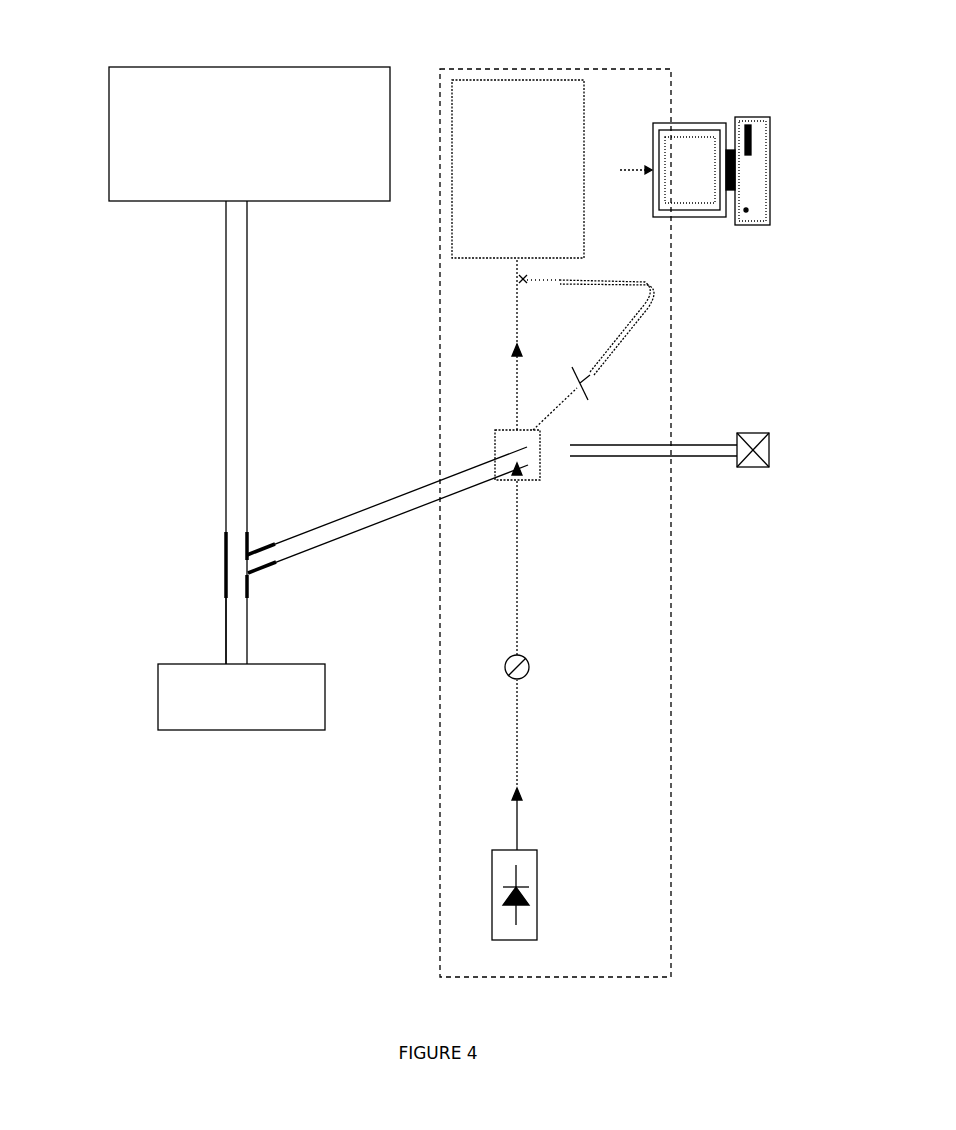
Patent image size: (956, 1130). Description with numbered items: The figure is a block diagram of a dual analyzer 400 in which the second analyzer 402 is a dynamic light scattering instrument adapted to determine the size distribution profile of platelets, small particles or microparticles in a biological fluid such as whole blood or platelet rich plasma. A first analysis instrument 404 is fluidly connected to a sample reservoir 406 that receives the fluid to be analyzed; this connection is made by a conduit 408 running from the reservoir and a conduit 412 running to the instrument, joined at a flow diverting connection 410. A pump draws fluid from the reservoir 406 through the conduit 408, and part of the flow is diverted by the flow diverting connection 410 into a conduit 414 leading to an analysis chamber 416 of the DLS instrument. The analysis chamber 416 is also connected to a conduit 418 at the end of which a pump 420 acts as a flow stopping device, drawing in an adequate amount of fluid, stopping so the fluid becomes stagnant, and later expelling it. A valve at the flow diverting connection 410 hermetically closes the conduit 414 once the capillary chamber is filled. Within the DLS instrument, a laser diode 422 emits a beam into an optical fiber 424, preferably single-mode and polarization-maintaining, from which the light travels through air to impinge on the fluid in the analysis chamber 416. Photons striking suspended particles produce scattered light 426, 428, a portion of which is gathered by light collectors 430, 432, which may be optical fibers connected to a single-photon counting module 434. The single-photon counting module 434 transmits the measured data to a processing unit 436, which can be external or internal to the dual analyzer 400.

The dual analyzer 400 is at (236, 875).
The second analyzer 402 is at (672, 595).
The first analysis instrument 404 is at (125, 150).
The sample reservoir 406 is at (175, 697).
The conduit 408 is at (225, 615).
The flow diverting connection 410 is at (225, 548).
The conduit 412 is at (227, 383).
The conduit 414 is at (333, 523).
The analysis chamber 416 is at (540, 465).
The conduit 418 is at (703, 450).
The pump 420 is at (768, 433).
The laser diode 422 is at (538, 860).
The optical fiber 424 is at (550, 730).
The scattered light 426 is at (552, 383).
The scattered light 428 is at (585, 367).
The light collector 430 is at (550, 285).
The light collector 432 is at (653, 333).
The single-photon counting module 434 is at (572, 103).
The processing unit 436 is at (720, 137).